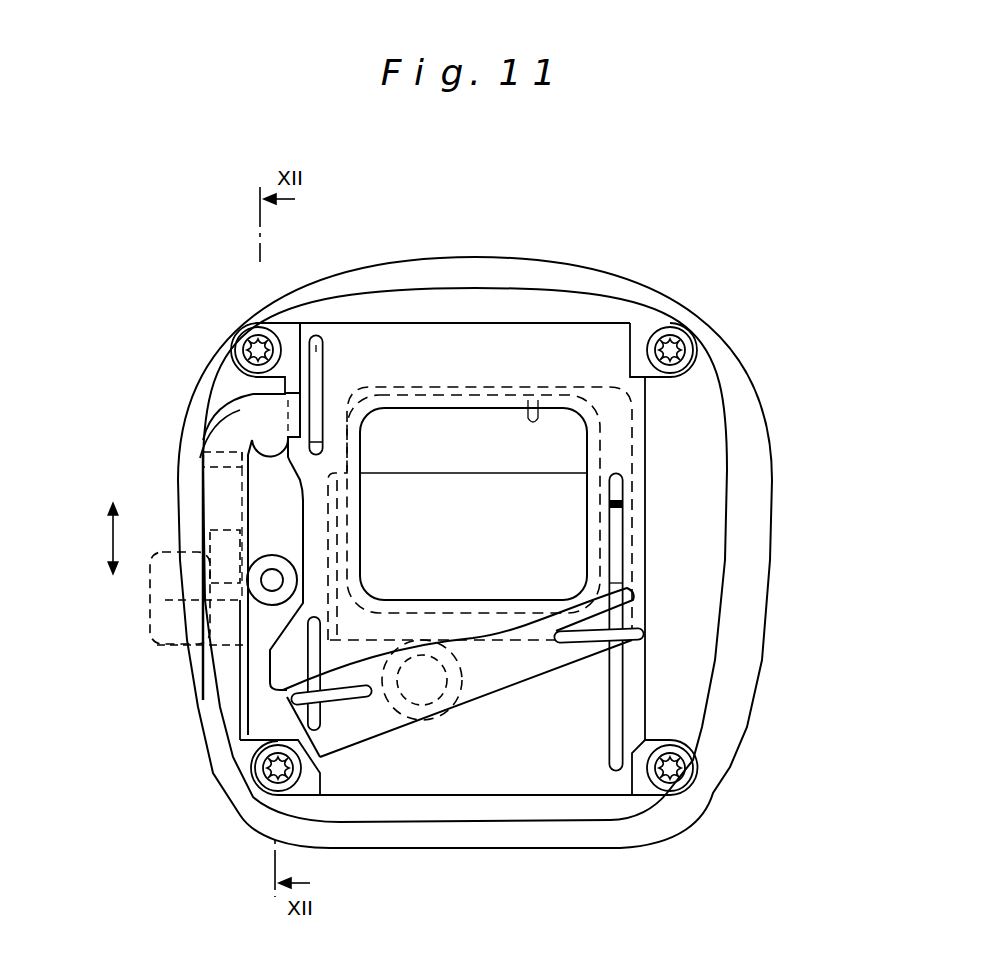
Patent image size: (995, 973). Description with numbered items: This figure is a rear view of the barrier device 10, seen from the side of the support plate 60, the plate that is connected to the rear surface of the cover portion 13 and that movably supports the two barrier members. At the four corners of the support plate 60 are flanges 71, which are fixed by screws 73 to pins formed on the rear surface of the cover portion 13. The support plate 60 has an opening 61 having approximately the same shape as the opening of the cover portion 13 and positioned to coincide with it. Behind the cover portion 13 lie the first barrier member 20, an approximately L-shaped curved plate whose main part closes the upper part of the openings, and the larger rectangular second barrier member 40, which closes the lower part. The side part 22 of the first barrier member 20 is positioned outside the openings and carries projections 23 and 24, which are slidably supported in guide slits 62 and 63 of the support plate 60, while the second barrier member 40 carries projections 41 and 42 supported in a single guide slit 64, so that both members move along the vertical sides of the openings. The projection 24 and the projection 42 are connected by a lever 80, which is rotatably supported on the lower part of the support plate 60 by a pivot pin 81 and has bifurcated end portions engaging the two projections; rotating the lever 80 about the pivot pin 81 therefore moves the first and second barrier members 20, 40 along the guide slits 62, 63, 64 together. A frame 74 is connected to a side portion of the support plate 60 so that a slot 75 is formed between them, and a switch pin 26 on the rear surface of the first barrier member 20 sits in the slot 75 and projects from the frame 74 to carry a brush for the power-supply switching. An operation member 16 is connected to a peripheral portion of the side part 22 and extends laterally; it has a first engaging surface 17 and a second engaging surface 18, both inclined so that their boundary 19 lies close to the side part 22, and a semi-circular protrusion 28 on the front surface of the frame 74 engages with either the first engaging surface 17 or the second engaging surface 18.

The barrier device 10 is at (742, 772).
The cover portion 13 is at (375, 852).
The operation member 16 is at (160, 582).
The first engaging surface 17 is at (190, 638).
The second engaging surface 18 is at (213, 542).
The boundary 19 is at (213, 608).
The first barrier member 20 is at (490, 422).
The side part 22 is at (267, 503).
The projection 23 is at (348, 423).
The projection 24 is at (275, 712).
The switch pin 26 is at (272, 555).
The semi-circular protrusion 28 is at (225, 527).
The second barrier member 40 is at (567, 530).
The projection 41 is at (623, 493).
The projection 42 is at (620, 620).
The support plate 60 is at (570, 797).
The opening 61 is at (531, 418).
The guide slit 62 is at (321, 338).
The guide slit 63 is at (307, 656).
The guide slit 64 is at (620, 685).
The flanges 71 is at (287, 322).
The screws 73 is at (252, 330).
The frame 74 is at (223, 423).
The slot 75 is at (263, 397).
The lever 80 is at (483, 699).
The pivot pin 81 is at (440, 727).